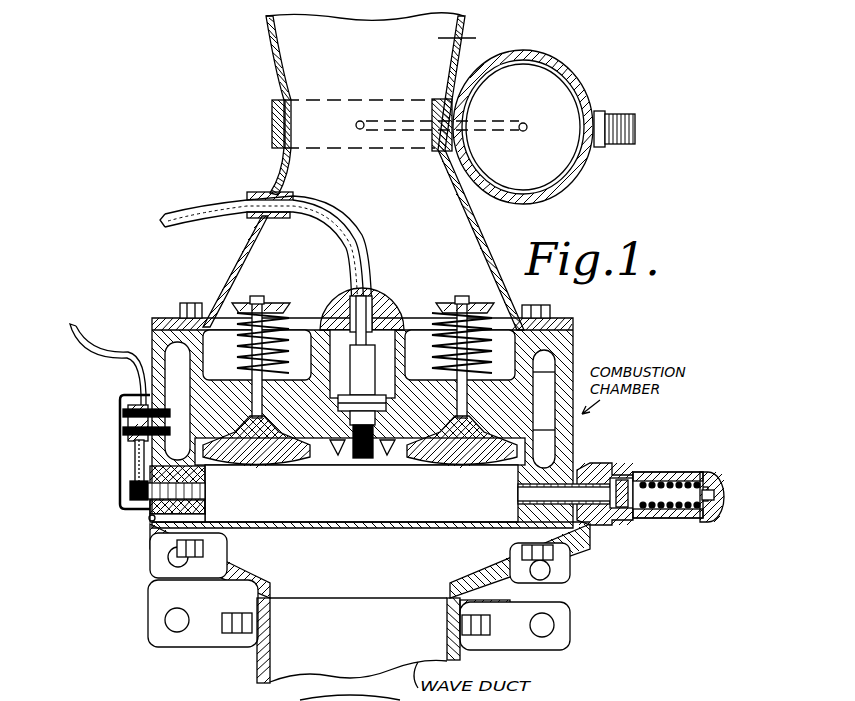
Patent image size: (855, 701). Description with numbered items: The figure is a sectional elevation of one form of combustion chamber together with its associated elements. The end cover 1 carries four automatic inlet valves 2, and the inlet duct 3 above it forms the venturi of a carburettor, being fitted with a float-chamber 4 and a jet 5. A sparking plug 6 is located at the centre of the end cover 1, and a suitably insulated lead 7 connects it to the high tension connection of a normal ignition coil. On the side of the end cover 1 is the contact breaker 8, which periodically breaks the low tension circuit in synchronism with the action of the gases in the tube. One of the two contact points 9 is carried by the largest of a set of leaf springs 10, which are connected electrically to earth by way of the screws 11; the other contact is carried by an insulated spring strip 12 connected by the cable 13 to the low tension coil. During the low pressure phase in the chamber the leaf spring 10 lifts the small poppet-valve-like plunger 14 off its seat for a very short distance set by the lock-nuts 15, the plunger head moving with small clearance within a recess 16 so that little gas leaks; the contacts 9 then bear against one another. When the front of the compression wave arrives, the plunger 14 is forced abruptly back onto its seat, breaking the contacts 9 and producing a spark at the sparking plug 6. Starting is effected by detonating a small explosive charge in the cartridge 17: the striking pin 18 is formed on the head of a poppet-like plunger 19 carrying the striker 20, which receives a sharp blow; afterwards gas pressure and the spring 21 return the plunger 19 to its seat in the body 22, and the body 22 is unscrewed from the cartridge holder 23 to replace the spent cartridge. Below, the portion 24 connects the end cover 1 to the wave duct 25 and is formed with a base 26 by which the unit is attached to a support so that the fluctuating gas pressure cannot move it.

The end cover 1 is at (160, 342).
The automatic inlet valves 2 is at (260, 330).
The inlet duct 3 is at (274, 62).
The float-chamber 4 is at (537, 198).
The jet 5 is at (362, 133).
The sparking plug 6 is at (382, 368).
The insulated lead 7 is at (200, 212).
The contact breaker 8 is at (162, 412).
The contact points 9 is at (128, 500).
The leaf springs 10 is at (133, 450).
The screws 11 is at (124, 413).
The insulated spring strip 12 is at (130, 468).
The cable 13 is at (94, 328).
The plunger 14 is at (151, 522).
The lock-nuts 15 is at (148, 512).
The recess 16 is at (205, 491).
The cartridge 17 is at (520, 493).
The striking pin 18 is at (620, 478).
The poppet like plunger 19 is at (662, 480).
The striker 20 is at (705, 472).
The spring 21 is at (672, 522).
The body 22 is at (614, 526).
The cartridge holder 23 is at (578, 526).
The portion 24 is at (262, 584).
The wave duct 25 is at (262, 640).
The base 26 is at (160, 638).